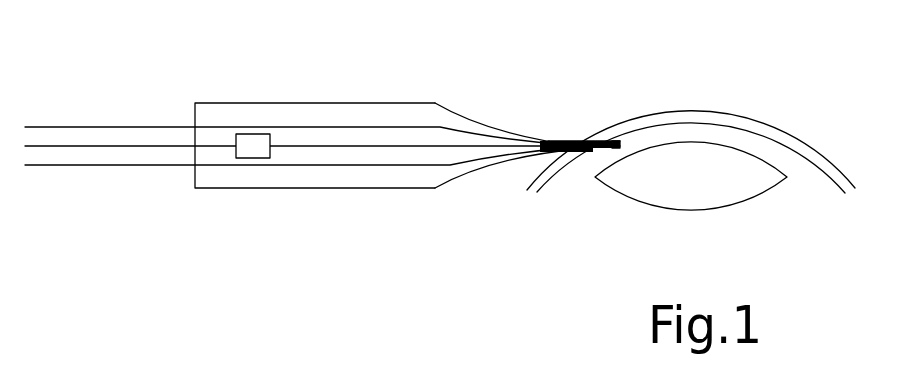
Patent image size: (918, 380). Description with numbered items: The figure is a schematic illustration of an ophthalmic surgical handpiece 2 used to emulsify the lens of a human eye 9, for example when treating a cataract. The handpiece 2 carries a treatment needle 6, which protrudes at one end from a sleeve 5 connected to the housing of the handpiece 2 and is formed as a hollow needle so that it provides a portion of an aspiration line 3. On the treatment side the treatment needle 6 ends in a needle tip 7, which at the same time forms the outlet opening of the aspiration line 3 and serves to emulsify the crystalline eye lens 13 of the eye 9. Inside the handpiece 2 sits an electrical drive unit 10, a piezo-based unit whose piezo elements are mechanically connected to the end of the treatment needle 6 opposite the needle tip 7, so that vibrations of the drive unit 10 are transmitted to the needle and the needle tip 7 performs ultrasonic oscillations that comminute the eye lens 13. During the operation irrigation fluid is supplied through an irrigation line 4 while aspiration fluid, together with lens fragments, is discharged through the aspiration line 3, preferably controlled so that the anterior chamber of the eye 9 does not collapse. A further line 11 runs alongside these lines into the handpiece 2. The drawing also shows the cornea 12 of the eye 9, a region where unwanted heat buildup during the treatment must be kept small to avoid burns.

The ophthalmic surgical handpiece 2 is at (350, 103).
The aspiration line 3 is at (137, 165).
The irrigation line 4 is at (152, 127).
The sleeve 5 is at (573, 153).
The treatment needle 6 is at (607, 140).
The needle tip 7 is at (634, 132).
The eye 9 is at (701, 143).
The electrical drive unit 10 is at (255, 134).
The central fiber / line 11 is at (97, 146).
The cornea 12 is at (813, 146).
The crystalline eye lens 13 is at (745, 203).